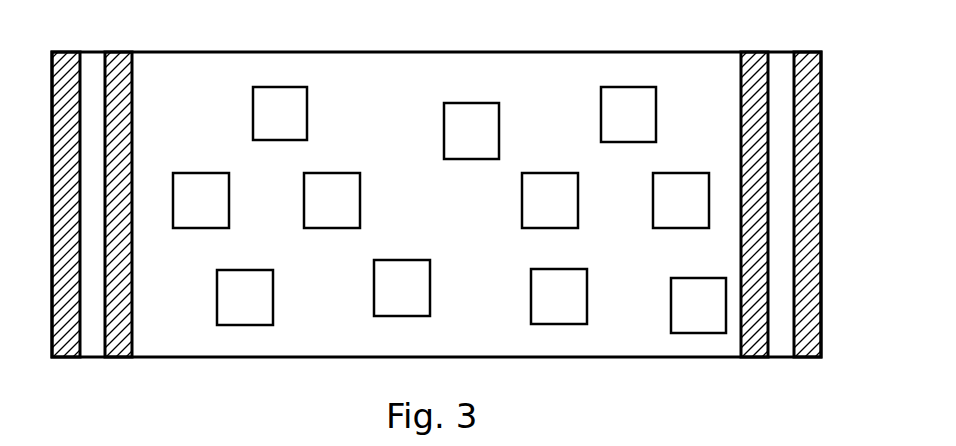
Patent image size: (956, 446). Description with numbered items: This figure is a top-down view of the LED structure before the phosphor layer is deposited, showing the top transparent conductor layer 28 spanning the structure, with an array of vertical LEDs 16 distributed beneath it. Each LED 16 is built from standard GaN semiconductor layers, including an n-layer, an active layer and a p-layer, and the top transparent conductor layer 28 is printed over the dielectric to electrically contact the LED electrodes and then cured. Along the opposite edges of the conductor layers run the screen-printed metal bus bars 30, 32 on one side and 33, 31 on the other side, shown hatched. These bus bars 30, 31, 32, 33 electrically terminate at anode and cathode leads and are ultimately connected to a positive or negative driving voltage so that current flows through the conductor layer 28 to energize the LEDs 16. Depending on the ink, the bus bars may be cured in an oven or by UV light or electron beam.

The vertical LEDs 16 is at (252, 123).
The top transparent conductor layer 28 is at (365, 52).
The metal bus bar 30 is at (67, 52).
The metal bus bar 31 is at (806, 52).
The metal bus bar 32 is at (118, 52).
The metal bus bar 33 is at (756, 52).